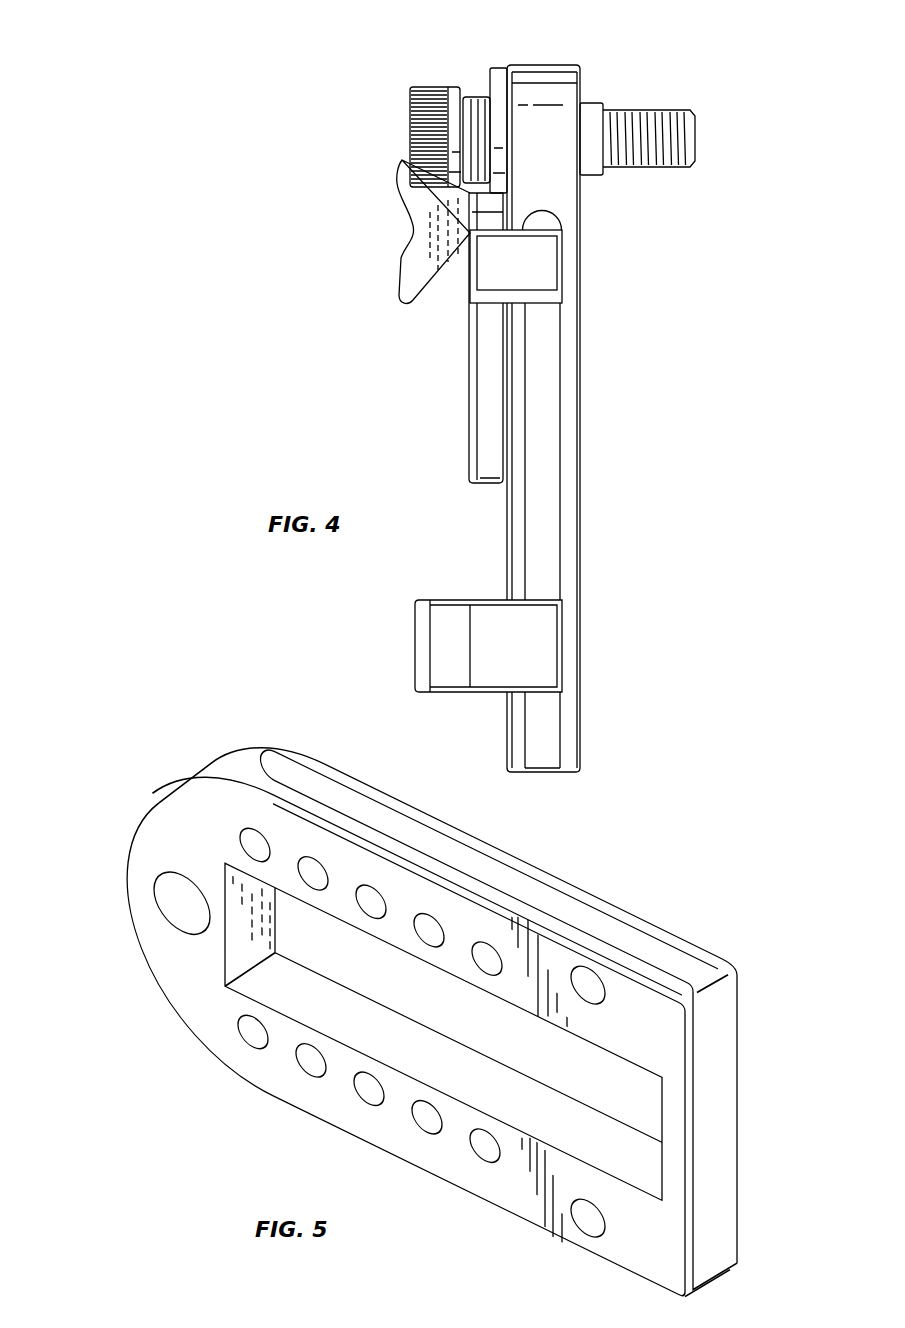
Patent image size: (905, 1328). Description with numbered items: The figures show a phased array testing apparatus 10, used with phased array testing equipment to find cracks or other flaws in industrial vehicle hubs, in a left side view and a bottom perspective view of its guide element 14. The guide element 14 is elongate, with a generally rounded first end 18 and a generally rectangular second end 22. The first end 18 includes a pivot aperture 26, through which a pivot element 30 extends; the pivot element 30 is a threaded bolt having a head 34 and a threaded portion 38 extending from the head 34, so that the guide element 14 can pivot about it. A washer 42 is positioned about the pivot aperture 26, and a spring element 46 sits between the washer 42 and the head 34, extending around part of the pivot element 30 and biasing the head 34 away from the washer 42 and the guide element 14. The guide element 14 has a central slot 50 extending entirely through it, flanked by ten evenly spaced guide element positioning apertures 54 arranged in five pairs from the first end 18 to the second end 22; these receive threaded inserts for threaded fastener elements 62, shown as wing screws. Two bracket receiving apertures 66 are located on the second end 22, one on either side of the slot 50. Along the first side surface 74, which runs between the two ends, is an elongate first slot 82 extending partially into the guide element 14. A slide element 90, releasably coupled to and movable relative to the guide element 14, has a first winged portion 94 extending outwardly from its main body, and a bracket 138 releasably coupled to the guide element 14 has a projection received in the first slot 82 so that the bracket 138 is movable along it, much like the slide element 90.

In FIG. 4, the phased array testing apparatus 10 is at (329, 88).
In FIG. 4, the guide element 14 is at (587, 660).
In FIG. 5, the guide element 14 is at (112, 778).
In FIG. 4, the first end 18 is at (560, 75).
In FIG. 5, the first end 18 is at (220, 760).
In FIG. 4, the second end 22 is at (570, 770).
In FIG. 5, the second end 22 is at (720, 1116).
In FIG. 5, the pivot aperture 26 is at (178, 905).
In FIG. 4, the pivot element 30 is at (650, 100).
In FIG. 4, the head 34 is at (426, 86).
In FIG. 4, the threaded portion 38 is at (680, 112).
In FIG. 4, the washer 42 is at (498, 68).
In FIG. 4, the spring element 46 is at (478, 97).
In FIG. 5, the central slot 50 is at (397, 990).
In FIG. 5, the guide element positioning apertures 54 is at (258, 845).
In FIG. 4, the threaded fastener elements 62 is at (427, 251).
In FIG. 5, the bracket receiving apertures 66 is at (588, 985).
In FIG. 4, the first side surface 74 is at (587, 461).
In FIG. 5, the first side surface 74 is at (684, 927).
In FIG. 4, the first slot 82 is at (546, 548).
In FIG. 5, the first slot 82 is at (552, 898).
In FIG. 4, the slide element 90 is at (466, 448).
In FIG. 4, the first winged portion 94 is at (534, 268).
In FIG. 4, the bracket 138 is at (413, 645).